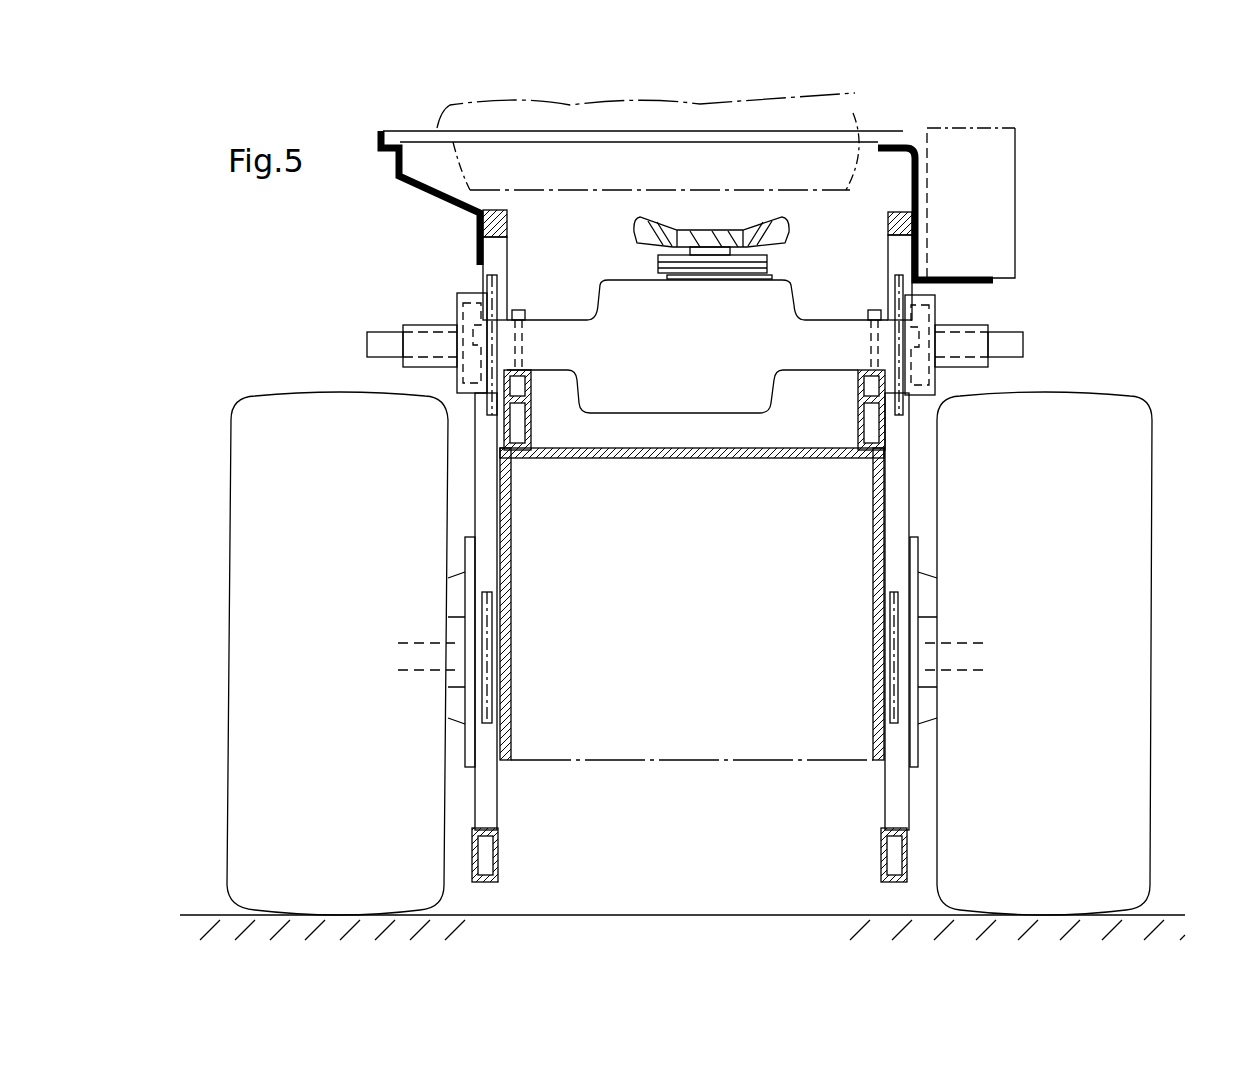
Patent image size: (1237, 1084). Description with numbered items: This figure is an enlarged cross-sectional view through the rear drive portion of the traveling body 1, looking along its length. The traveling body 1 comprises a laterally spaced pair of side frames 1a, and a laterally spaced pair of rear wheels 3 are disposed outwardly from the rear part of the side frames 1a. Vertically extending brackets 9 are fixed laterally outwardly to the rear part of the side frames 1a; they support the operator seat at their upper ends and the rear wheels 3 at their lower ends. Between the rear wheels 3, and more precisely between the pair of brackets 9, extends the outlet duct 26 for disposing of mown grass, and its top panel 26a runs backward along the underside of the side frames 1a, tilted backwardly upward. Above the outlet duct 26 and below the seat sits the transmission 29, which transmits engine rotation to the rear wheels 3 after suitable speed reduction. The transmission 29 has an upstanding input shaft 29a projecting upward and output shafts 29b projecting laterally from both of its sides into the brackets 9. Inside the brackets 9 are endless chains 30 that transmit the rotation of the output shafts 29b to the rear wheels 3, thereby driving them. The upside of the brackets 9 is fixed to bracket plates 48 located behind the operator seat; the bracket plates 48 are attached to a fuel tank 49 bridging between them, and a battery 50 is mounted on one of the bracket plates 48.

The traveling body 1 is at (1093, 266).
The side frames 1a is at (507, 428).
The rear wheels 3 is at (272, 683).
The brackets 9 is at (494, 857).
The outlet duct 26 is at (692, 631).
The top panel 26a is at (787, 458).
The transmission 29 is at (626, 315).
The input shaft 29a is at (715, 250).
The output shafts 29b is at (385, 343).
The endless chains 30 is at (490, 495).
The bracket plates 48 is at (445, 192).
The fuel tank 49 is at (858, 120).
The battery 50 is at (990, 205).